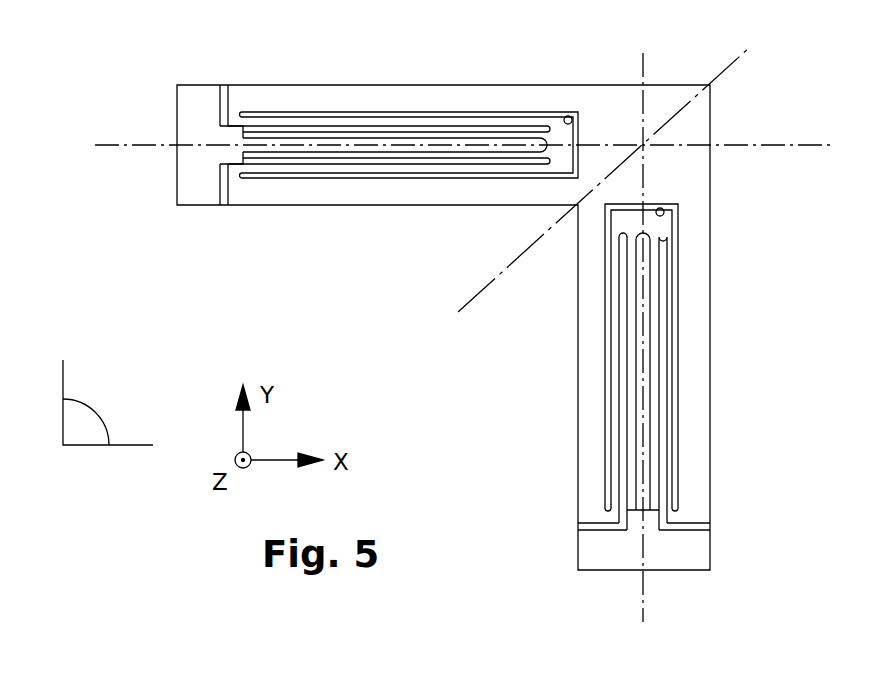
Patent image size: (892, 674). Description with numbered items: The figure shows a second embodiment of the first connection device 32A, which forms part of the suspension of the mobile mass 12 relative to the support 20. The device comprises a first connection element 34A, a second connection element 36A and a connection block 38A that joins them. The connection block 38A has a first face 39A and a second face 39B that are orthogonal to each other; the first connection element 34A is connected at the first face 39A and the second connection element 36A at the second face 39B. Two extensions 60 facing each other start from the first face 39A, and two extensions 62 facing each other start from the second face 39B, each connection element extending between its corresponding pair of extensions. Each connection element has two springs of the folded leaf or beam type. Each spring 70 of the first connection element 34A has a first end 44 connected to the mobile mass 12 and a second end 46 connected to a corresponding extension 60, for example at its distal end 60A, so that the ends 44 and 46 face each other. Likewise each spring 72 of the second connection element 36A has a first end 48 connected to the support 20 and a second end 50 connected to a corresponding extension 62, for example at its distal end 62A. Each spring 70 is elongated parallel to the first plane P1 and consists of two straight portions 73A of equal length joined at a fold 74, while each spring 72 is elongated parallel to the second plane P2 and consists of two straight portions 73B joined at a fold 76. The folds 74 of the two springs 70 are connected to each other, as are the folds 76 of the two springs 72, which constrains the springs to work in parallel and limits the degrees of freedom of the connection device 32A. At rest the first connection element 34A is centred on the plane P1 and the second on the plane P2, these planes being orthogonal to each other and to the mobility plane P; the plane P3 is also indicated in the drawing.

The mobile mass 12 is at (197, 190).
The support 20 is at (663, 557).
The first connection device 32A is at (456, 389).
The first connection element 34A is at (348, 104).
The second connection element 36A is at (690, 412).
The connection block 38A is at (690, 128).
The first face 39A is at (565, 115).
The second face 39B is at (665, 213).
The first end 44 is at (245, 133).
The second end 46 is at (235, 124).
The first end 48 is at (628, 505).
The second end 50 is at (614, 527).
The extension 60 is at (402, 100).
The distal end 60A is at (232, 118).
The extension 62 is at (693, 380).
The distal end 62A is at (668, 518).
The spring 70 is at (465, 157).
The spring 72 is at (640, 345).
The straight portion 73A is at (500, 172).
The straight portion 73B is at (658, 294).
The fold 74 is at (535, 162).
The fold 76 is at (663, 240).
The mobility plane P is at (95, 427).
The first plane P1 is at (112, 140).
The second plane P2 is at (638, 590).
The plane P3 is at (483, 288).